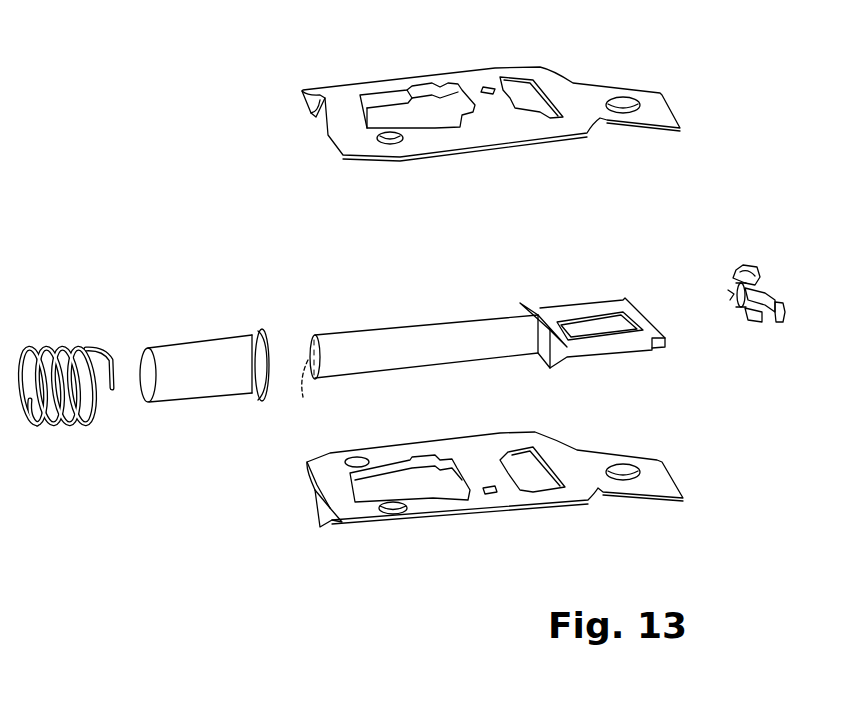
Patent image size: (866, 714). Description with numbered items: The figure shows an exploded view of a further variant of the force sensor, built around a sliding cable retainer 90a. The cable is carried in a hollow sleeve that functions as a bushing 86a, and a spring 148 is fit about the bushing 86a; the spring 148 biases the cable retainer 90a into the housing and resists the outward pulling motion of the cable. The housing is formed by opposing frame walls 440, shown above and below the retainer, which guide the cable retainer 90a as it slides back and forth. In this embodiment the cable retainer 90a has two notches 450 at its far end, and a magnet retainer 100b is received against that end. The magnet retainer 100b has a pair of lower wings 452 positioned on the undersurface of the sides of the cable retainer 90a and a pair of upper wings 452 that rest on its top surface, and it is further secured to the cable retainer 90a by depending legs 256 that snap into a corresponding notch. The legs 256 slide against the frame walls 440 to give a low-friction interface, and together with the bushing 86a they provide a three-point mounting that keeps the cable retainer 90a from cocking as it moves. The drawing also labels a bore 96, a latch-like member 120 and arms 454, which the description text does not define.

The opposing walls 440 is at (528, 80).
The spring 148 is at (78, 342).
The bushing 86a is at (212, 350).
The cable retainer 90a is at (502, 306).
The bore 96 is at (320, 380).
The notches 450 is at (627, 300).
The latch member 120 is at (755, 310).
The depending legs 256 is at (748, 263).
The latch arms 454 is at (753, 272).
The wings 452 is at (728, 295).
The magnet retainer 100b is at (732, 278).